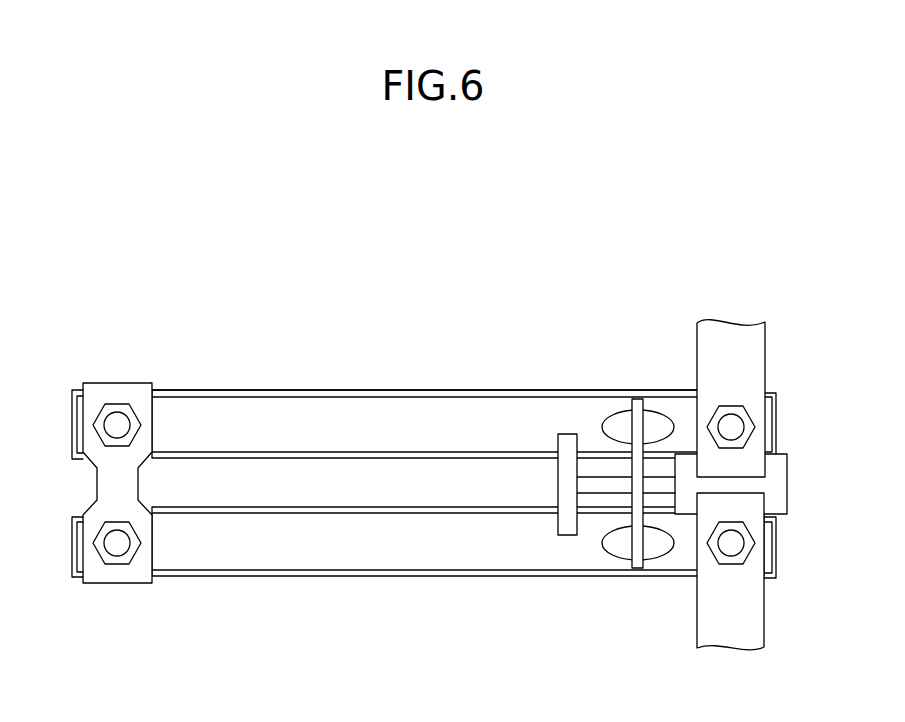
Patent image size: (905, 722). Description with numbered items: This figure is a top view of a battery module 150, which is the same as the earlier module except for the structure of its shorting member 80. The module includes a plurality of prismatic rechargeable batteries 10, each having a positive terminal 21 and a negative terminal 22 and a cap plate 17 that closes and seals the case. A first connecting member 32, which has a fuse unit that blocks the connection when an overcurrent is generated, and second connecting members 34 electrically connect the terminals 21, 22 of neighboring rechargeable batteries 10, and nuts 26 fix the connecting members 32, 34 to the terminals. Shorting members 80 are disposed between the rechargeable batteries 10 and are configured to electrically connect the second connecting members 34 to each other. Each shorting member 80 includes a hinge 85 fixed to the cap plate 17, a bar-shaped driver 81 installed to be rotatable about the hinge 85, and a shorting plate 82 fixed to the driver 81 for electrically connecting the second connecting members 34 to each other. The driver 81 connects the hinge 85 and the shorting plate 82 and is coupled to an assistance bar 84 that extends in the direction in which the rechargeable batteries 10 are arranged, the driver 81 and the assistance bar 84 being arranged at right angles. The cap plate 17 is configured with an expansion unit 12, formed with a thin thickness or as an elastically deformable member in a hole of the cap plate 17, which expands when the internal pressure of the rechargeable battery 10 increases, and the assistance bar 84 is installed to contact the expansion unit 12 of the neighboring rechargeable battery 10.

The battery module 150 is at (663, 241).
The rechargeable battery 10 is at (312, 383).
The cap plate 17 is at (407, 415).
The first connecting member 32 is at (120, 390).
The negative terminal 22 is at (115, 428).
The positive terminal 21 is at (118, 544).
The nut 26 is at (118, 565).
The second connecting member 34 is at (748, 352).
The shorting plate 82 is at (777, 484).
The expansion unit 12 is at (612, 412).
The shorting member 80 is at (558, 425).
The driver 81 is at (598, 486).
The assistance bar 84 is at (638, 399).
The hinge 85 is at (567, 523).